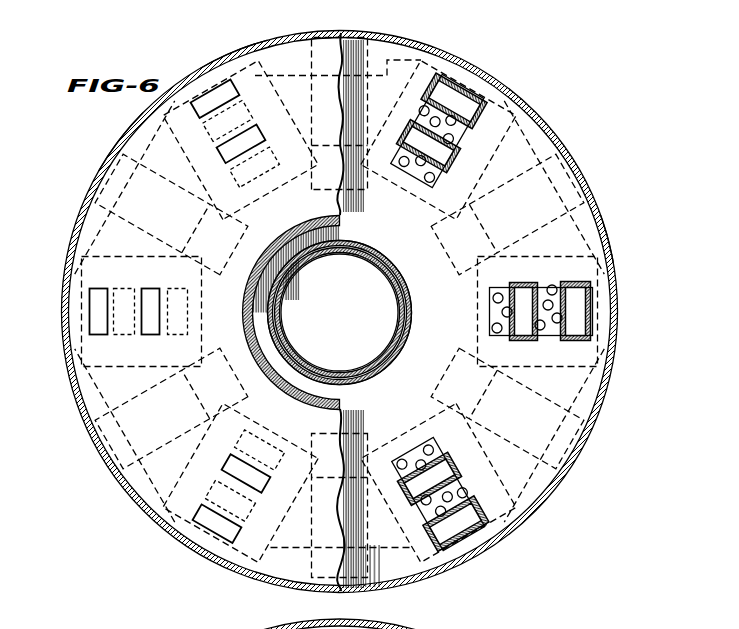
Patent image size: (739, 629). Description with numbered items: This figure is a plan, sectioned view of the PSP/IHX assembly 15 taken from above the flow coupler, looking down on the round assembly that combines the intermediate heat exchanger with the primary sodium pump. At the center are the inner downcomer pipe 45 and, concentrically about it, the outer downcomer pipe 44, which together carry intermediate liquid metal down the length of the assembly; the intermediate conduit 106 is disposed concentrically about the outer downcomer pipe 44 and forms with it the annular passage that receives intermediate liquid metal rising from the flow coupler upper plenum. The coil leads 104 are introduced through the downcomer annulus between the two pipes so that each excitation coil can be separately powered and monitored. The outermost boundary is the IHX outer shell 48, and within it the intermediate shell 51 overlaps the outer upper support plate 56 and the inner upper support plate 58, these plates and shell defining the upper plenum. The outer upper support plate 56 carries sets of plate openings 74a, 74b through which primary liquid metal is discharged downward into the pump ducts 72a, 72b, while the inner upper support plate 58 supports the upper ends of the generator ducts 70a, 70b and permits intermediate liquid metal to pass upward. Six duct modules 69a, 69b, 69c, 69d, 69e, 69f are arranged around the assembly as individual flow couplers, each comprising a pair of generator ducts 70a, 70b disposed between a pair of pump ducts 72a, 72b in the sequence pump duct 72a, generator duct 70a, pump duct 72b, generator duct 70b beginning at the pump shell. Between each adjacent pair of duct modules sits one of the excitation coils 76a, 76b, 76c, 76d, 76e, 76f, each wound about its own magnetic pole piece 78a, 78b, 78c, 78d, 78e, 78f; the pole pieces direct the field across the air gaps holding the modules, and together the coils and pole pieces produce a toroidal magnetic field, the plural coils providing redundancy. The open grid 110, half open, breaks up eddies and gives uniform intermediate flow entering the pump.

The PSP/IHX assembly 15 is at (529, 98).
The outer downcomer pipe 44 is at (412, 302).
The inner downcomer pipe 45 is at (397, 302).
The IHX outer shell 48 is at (125, 133).
The intermediate shell 51 is at (609, 245).
The outer upper support plate 56 is at (280, 47).
The inner upper support plate 58 is at (410, 50).
The duct module 69a is at (201, 532).
The duct module 69b is at (129, 312).
The duct module 69c is at (208, 86).
The duct module 69d is at (490, 99).
The duct module 69e is at (547, 312).
The duct module 69f is at (459, 484).
The intermediate or generator duct 70a is at (128, 284).
The intermediate or generator duct 70b is at (188, 305).
The primary or pump duct 72a is at (572, 281).
The primary or pump duct 72b is at (513, 283).
The plate opening 74a is at (98, 334).
The plate opening 74b is at (150, 334).
The excitation coil 76a is at (335, 596).
The excitation coil 76b is at (108, 443).
The excitation coil 76c is at (106, 175).
The excitation coil 76d is at (330, 40).
The excitation coil 76e is at (584, 170).
The excitation coil 76f is at (578, 462).
The magnetic pole piece 78a is at (270, 583).
The magnetic pole piece 78b is at (136, 491).
The magnetic pole piece 78c is at (95, 217).
The magnetic pole piece 78d is at (388, 52).
The magnetic pole piece 78e is at (553, 137).
The magnetic pole piece 78f is at (597, 401).
The coil leads 104 is at (346, 243).
The intermediate conduit 106 is at (296, 224).
The open grid 110 is at (420, 438).